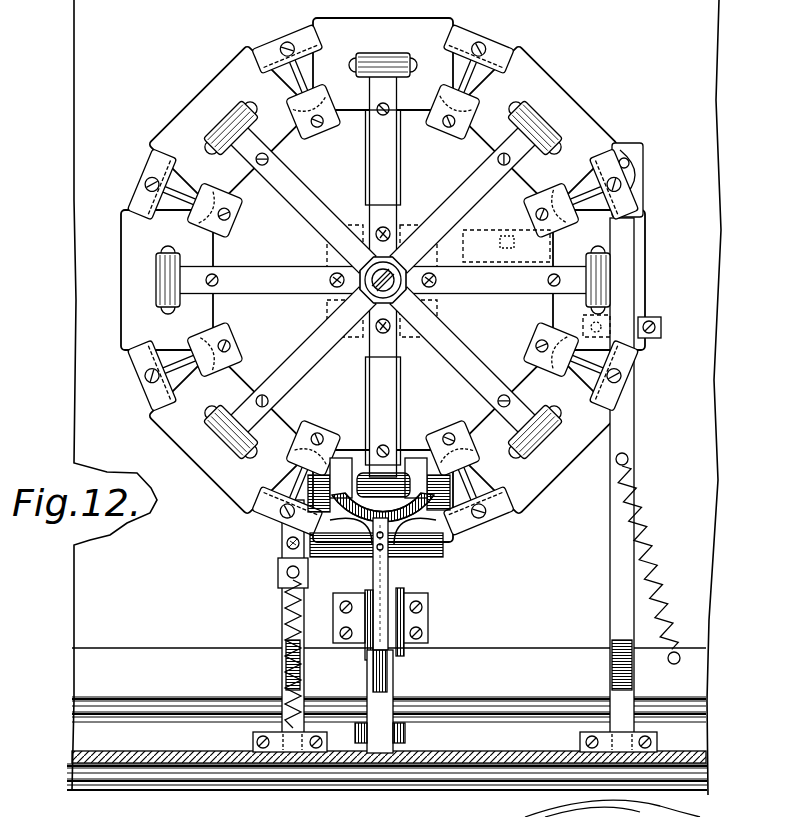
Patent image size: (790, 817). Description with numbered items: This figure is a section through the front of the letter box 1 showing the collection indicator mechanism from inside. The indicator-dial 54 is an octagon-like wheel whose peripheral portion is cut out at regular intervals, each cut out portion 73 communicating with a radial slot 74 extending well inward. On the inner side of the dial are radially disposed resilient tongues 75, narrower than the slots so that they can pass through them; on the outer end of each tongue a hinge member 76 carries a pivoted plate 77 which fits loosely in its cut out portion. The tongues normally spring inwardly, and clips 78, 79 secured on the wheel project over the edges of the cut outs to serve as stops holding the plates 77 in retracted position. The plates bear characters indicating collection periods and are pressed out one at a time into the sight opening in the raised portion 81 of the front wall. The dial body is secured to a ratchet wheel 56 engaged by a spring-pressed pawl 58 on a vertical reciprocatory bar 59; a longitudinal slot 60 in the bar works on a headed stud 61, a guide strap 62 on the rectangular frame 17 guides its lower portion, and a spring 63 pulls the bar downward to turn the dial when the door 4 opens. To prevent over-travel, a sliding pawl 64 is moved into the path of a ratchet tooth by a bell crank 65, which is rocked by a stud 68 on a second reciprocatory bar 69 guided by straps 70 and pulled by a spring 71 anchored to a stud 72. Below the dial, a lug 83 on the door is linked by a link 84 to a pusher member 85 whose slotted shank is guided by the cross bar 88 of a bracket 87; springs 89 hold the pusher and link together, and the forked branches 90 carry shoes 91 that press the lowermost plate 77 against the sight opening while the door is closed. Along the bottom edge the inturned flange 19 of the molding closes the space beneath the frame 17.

The letter box 1 is at (396, 408).
The hinged door 4 is at (455, 761).
The rectangular frame 17 is at (150, 662).
The inturned bottom flange 19 is at (258, 790).
The indicator-dial 54 is at (406, 188).
The ratchet wheel 56 is at (340, 262).
The spring-pressed pawl 58 is at (330, 306).
The vertical reciprocatory bar 59 is at (282, 618).
The longitudinal slot 60 is at (287, 543).
The headed stud 61 is at (287, 556).
The guide strap 62 is at (318, 733).
The spring 63 is at (273, 654).
The sliding pawl 64 is at (482, 252).
The bell crank 65 is at (640, 192).
The stud 68 is at (632, 164).
The vertical reciprocatory bar 69 is at (630, 444).
The guide strap 70 is at (655, 324).
The spring 71 is at (660, 577).
The stud 72 is at (675, 675).
The cut out portion 73 is at (400, 106).
The radial slot 74 is at (254, 264).
The resilient tongue 75 is at (448, 198).
The hinge member 76 is at (546, 130).
The plate 77 is at (562, 110).
The clip 78 is at (494, 55).
The clip 79 is at (336, 130).
The raised portion 81 is at (444, 540).
The lug 83 is at (385, 732).
The link 84 is at (392, 652).
The pusher member 85 is at (365, 612).
The bracket 87 is at (429, 628).
The cross bar 88 is at (400, 591).
The spring 89 is at (372, 577).
The branch 90 is at (395, 523).
The shoe 91 is at (338, 452).